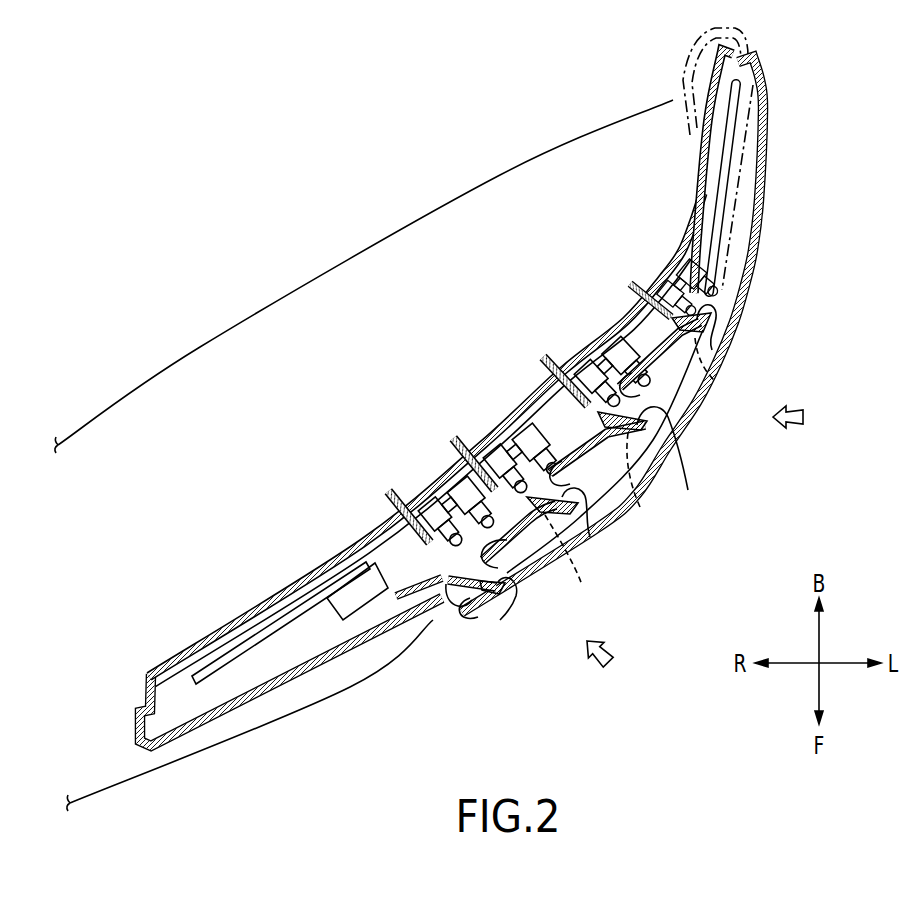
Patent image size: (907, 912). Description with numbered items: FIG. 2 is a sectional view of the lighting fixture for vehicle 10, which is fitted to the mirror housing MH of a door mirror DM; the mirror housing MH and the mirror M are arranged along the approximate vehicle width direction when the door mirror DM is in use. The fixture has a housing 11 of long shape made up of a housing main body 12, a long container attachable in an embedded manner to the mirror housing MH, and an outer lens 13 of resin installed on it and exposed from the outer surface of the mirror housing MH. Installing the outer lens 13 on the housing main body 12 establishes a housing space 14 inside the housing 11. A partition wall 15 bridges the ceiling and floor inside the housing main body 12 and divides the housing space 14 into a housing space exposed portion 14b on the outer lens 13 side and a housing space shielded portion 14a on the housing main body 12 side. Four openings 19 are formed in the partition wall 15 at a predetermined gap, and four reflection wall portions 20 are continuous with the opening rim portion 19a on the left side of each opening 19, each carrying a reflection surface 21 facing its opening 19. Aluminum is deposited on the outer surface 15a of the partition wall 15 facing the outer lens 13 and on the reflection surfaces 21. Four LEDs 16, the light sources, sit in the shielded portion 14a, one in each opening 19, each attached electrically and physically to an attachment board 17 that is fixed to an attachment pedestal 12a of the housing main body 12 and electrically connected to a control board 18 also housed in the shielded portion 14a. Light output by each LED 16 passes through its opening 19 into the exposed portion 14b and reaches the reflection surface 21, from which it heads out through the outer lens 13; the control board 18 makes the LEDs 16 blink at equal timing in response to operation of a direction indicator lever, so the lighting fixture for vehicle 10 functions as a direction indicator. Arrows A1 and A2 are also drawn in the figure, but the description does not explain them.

The lighting fixture for vehicle 10 is at (548, 652).
The housing 11 is at (786, 125).
The housing main body 12 is at (323, 542).
The attachment pedestal 12a is at (679, 243).
The outer lens 13 is at (633, 530).
The housing space 14 is at (742, 180).
The housing space shielded portion 14a is at (698, 228).
The housing space exposed portion 14b is at (725, 225).
The partition wall 15 is at (672, 372).
The outer surface 15a is at (663, 410).
The LED 16 is at (655, 285).
The attachment board 17 is at (640, 278).
The control board 18 is at (252, 637).
The opening 19 is at (712, 292).
The opening rim portion 19a is at (716, 360).
The reflection wall portion 20 is at (716, 342).
The reflection surface 21 is at (735, 308).
The mirror M is at (366, 243).
The mirror housing MH is at (356, 672).
The door mirror DM is at (424, 664).
The viewing direction arrow A1 is at (803, 418).
The viewing direction arrow A2 is at (608, 655).